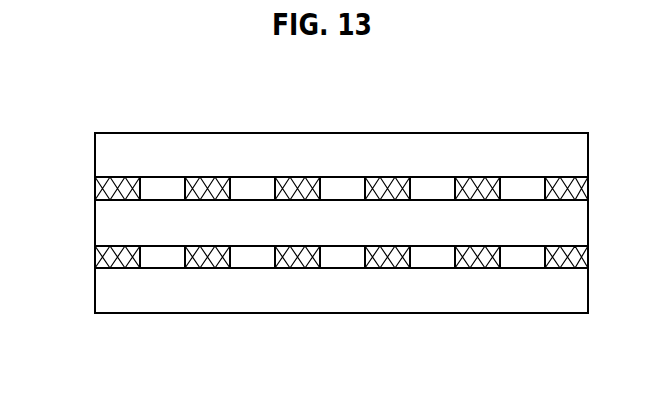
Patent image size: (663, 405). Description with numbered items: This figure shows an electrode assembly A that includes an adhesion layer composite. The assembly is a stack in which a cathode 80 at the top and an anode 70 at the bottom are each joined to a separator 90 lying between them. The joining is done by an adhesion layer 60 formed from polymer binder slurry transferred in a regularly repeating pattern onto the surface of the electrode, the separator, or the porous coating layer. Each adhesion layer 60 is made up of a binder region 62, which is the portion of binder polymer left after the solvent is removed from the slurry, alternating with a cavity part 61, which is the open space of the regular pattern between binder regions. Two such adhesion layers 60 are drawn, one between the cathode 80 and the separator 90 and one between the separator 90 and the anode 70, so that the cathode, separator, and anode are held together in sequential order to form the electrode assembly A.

The adhesion layer 60 is at (92, 188).
The cavity part 61 is at (161, 190).
The binder region 62 is at (96, 180).
The anode 70 is at (588, 293).
The cathode 80 is at (588, 157).
The separator 90 is at (588, 225).
The electrode assembly A is at (65, 332).